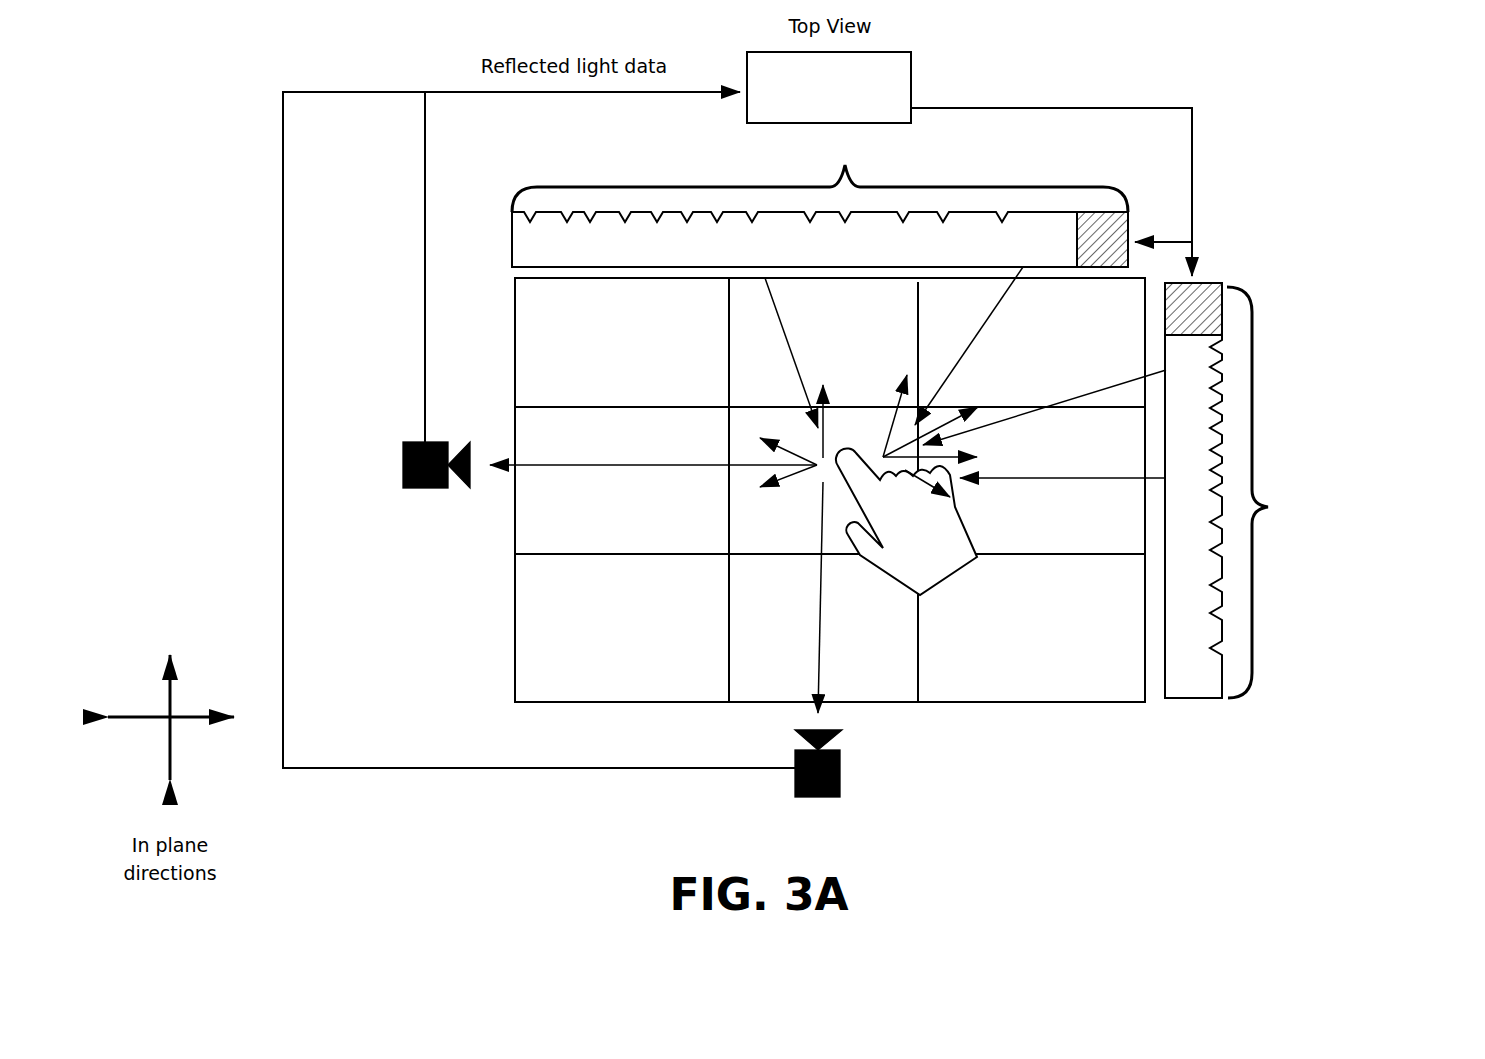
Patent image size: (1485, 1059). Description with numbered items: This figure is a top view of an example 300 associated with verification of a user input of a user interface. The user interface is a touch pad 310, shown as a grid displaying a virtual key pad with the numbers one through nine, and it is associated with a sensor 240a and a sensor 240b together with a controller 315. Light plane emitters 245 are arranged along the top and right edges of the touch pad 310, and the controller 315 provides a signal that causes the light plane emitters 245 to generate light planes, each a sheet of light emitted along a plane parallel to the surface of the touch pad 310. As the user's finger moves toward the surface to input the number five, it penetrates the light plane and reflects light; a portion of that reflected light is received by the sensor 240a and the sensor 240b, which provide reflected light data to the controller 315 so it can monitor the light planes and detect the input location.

The example 300 is at (232, 50).
The controller 315 is at (829, 87).
The light plane emitters 245 is at (988, 417).
The touch pad 310 is at (828, 490).
The sensor 240a is at (420, 442).
The sensor 240b is at (840, 770).